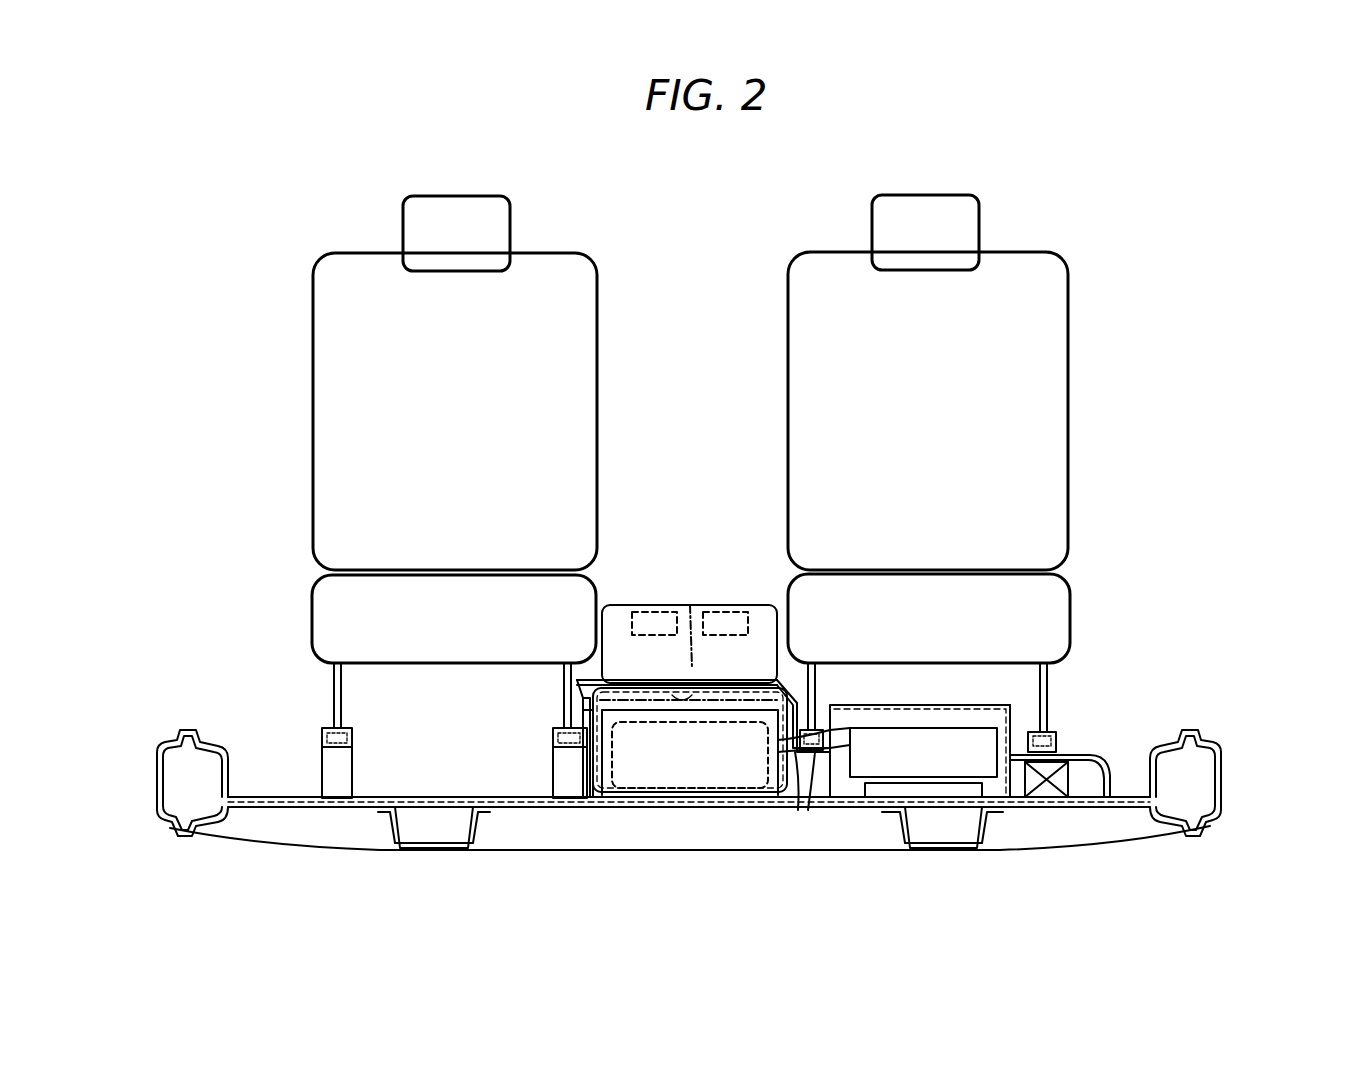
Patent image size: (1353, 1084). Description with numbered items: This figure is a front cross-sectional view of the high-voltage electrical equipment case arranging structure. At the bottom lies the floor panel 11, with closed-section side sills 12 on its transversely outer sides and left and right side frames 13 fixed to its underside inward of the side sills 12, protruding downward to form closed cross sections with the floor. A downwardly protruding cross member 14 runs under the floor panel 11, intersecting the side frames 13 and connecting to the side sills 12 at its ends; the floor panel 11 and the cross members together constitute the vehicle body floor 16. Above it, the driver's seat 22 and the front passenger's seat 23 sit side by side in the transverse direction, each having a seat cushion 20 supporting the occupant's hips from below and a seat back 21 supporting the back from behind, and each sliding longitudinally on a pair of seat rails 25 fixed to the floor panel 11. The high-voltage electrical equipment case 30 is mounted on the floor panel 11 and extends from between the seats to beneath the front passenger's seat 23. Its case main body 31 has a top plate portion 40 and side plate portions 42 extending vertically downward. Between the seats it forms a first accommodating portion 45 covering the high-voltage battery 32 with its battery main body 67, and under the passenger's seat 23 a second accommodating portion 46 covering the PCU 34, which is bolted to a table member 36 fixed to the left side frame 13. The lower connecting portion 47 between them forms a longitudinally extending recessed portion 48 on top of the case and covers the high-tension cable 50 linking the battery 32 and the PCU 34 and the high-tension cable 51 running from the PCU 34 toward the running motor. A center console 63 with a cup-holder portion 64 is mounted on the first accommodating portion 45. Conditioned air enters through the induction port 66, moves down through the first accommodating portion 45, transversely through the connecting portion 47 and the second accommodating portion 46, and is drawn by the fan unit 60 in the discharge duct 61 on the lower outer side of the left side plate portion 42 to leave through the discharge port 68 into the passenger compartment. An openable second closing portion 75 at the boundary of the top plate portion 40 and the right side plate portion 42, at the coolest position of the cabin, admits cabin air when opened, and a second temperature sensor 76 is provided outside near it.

The floor panel 11 is at (1132, 792).
The side sills 12 is at (148, 768).
The side frames 13 is at (436, 858).
The cross member 14 is at (676, 856).
The vehicle body floor 16 is at (240, 722).
The seat cushion 20 is at (312, 608).
The seat back 21 is at (313, 462).
The driver's seat 22 is at (300, 332).
The front passenger's seat 23 is at (1080, 330).
The seat rails 25 is at (352, 738).
The high-voltage electrical equipment case 30 is at (790, 675).
The case main body 31 is at (876, 728).
The high-voltage battery 32 is at (592, 768).
The PCU (power control unit) 34 is at (920, 728).
The table member 36 is at (858, 800).
The top plate portion 40 is at (631, 672).
The side plate portions 42 is at (580, 714).
The first accommodating portion 45 is at (755, 685).
The second accommodating portion 46 is at (905, 705).
The connecting portion 47 is at (790, 750).
The recessed portion 48 is at (778, 734).
The high-tension cable 50 is at (798, 820).
The high-tension cable 51 is at (830, 808).
The fan unit 60 is at (1070, 785).
The discharge duct 61 is at (1076, 753).
The center console 63 is at (689, 590).
The cup-holder portion 64 is at (648, 612).
The induction port 66 is at (690, 631).
The battery main body 67 is at (635, 797).
The discharge port 68 is at (1127, 790).
The second closing portion 75 is at (580, 678).
The second temperature sensor 76 is at (579, 700).